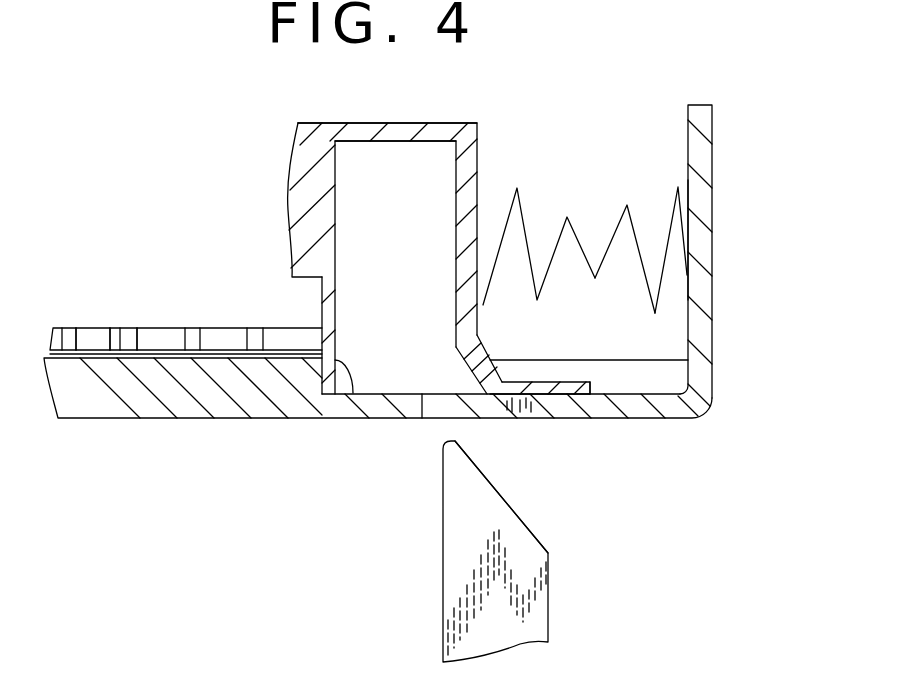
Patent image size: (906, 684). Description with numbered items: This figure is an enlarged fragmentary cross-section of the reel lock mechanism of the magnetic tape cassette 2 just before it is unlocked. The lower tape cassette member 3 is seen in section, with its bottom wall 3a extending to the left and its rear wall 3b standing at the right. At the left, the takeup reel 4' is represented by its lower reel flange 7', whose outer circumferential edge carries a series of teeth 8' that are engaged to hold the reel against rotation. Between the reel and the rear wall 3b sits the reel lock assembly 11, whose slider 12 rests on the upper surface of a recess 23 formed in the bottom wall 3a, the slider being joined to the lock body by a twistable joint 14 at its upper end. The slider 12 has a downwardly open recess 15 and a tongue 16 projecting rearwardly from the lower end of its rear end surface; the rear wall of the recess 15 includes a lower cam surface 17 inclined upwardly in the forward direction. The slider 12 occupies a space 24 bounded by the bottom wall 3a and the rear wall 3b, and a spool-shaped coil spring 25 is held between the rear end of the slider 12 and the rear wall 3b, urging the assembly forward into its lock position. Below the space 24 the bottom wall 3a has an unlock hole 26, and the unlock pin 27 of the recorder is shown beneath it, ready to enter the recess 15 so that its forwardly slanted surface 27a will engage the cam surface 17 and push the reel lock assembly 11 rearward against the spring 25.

The magnetic tape cassette 2 is at (712, 118).
The lower tape cassette member 3 is at (712, 150).
The bottom wall 3a is at (112, 328).
The rear wall 3b is at (702, 205).
The takeup reel 4' is at (93, 292).
The reel flange 7' is at (176, 292).
The teeth 8' is at (160, 309).
The reel lock assembly 11 is at (363, 270).
The slider 12 is at (411, 130).
The twistable joint 14 is at (308, 155).
The recess 15 is at (352, 396).
The tongue 16 is at (572, 382).
The cam surface 17 is at (460, 365).
The recess 23 is at (626, 393).
The space 24 is at (585, 220).
The coil spring 25 is at (622, 212).
The unlock hole 26 is at (568, 396).
The unlock pin 27 is at (534, 551).
The forwardly slanted surface 27a is at (517, 513).